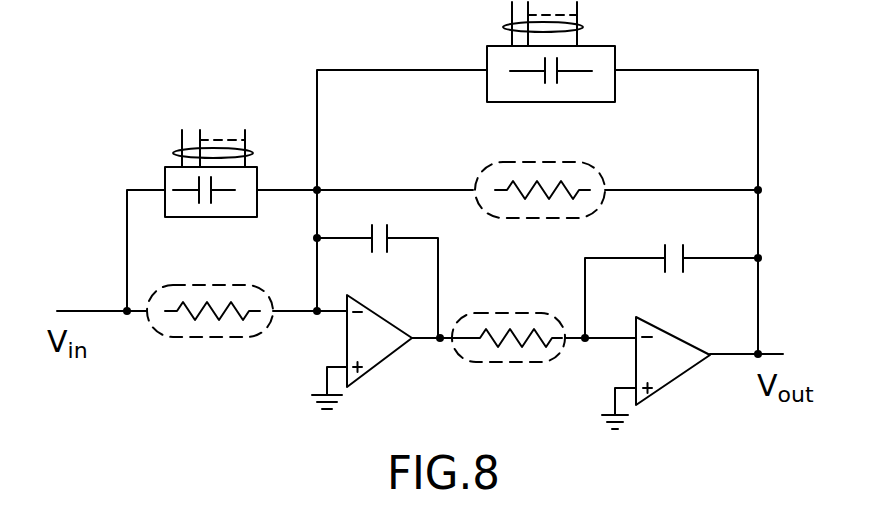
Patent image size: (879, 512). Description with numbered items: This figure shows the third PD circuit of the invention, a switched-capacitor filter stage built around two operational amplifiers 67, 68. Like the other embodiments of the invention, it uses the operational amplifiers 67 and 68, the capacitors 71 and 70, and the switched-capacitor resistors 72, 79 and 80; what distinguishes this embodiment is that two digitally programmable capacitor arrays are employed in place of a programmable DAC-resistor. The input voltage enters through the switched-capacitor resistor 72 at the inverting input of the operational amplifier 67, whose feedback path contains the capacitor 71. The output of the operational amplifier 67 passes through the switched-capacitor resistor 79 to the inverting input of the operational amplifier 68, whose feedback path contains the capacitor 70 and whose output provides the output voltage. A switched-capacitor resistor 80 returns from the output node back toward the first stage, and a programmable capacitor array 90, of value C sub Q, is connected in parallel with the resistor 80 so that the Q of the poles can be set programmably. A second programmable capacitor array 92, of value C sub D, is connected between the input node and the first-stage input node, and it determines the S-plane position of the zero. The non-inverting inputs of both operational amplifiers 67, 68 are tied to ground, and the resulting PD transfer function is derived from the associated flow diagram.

The programmable capacitor array 90 is at (487, 50).
The programmable capacitor array 92 is at (165, 171).
The switched-capacitor resistor 80 is at (487, 156).
The switched-capacitor resistor 72 is at (238, 285).
The switched-capacitor resistor 79 is at (525, 313).
The capacitor 71 is at (379, 228).
The capacitor 70 is at (673, 247).
The operational amplifier 67 is at (380, 345).
The operational amplifier 68 is at (670, 371).